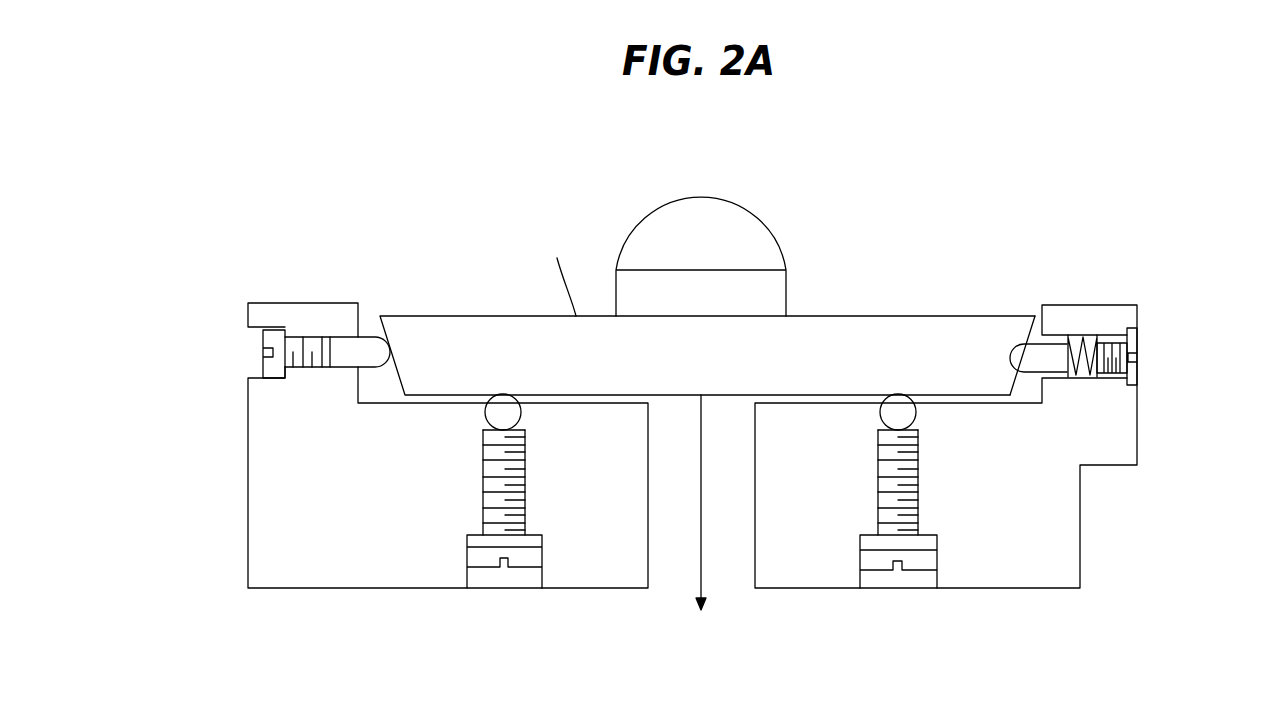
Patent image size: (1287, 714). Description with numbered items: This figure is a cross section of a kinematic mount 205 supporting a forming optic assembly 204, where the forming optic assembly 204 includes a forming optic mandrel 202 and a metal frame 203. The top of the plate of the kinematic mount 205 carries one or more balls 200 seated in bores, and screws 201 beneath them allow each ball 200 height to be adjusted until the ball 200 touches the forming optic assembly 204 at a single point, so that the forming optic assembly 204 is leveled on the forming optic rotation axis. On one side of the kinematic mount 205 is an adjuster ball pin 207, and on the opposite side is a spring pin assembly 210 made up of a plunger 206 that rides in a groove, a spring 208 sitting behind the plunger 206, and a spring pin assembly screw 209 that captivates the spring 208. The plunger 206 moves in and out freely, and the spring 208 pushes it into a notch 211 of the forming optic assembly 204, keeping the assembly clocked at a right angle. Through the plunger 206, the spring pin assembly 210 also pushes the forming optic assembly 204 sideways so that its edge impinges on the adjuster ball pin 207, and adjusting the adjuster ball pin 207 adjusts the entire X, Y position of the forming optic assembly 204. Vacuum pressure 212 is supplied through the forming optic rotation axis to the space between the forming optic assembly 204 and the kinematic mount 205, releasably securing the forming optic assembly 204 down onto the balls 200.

The ball 200 is at (905, 417).
The screw 201 is at (918, 562).
The forming optic mandrel 202 is at (738, 233).
The metal frame 203 is at (895, 357).
The forming optic assembly 204 is at (622, 248).
The kinematic mount 205 is at (220, 297).
The plunger 206 is at (1037, 350).
The adjuster ball pin 207 is at (348, 353).
The spring 208 is at (1083, 335).
The spring pin assembly screw 209 is at (1140, 337).
The spring pin assembly 210 is at (1165, 303).
The notch 211 is at (1007, 370).
The vacuum pressure 212 is at (701, 580).